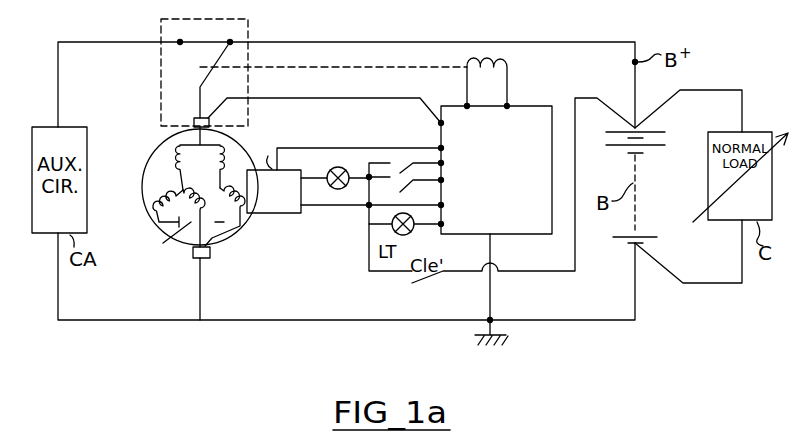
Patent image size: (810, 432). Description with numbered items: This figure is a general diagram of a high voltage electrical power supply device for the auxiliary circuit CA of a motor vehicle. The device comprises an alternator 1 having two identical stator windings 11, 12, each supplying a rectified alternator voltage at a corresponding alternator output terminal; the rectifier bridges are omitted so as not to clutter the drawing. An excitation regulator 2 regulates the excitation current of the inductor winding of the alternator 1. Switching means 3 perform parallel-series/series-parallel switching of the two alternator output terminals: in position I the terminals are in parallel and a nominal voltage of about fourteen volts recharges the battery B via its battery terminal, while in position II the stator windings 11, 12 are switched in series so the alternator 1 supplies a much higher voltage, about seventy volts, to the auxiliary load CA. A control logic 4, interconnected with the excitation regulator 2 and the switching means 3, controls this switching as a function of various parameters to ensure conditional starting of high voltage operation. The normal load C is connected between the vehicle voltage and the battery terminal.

The alternator 1 is at (185, 223).
The excitation regulator 2 is at (267, 214).
The switching means 3 is at (163, 77).
The control logic 4 is at (516, 226).
The stator winding 11 is at (175, 181).
The stator winding 12 is at (220, 156).